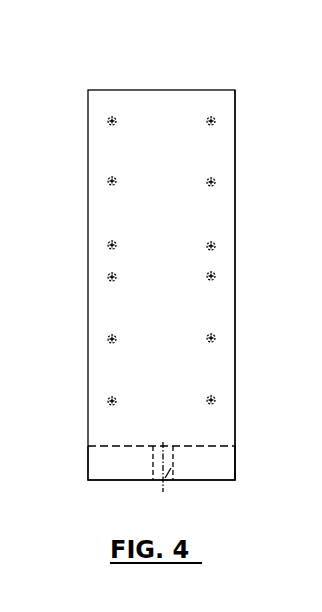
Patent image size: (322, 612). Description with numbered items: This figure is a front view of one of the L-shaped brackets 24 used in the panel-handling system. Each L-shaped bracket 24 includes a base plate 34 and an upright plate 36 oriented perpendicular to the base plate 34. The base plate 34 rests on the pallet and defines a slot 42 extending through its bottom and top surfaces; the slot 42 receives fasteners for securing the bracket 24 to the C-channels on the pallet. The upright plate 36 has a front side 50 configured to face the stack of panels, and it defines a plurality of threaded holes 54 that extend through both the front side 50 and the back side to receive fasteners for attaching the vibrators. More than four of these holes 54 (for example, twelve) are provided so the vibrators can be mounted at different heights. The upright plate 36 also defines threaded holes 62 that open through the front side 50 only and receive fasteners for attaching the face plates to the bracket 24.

The L-shaped bracket 24 is at (150, 62).
The base plate 34 is at (236, 467).
The upright plate 36 is at (220, 298).
The slot 42 is at (162, 477).
The front side 50 is at (161, 287).
The holes 54 is at (107, 124).
The holes 62 is at (127, 112).